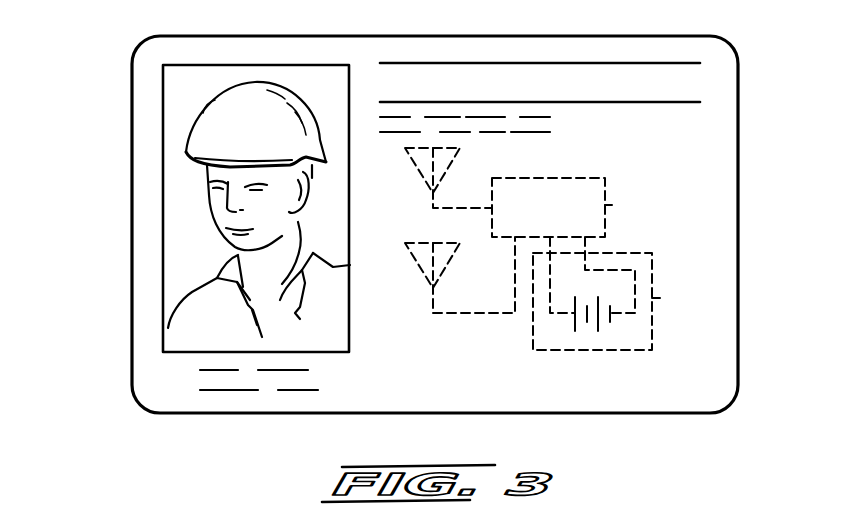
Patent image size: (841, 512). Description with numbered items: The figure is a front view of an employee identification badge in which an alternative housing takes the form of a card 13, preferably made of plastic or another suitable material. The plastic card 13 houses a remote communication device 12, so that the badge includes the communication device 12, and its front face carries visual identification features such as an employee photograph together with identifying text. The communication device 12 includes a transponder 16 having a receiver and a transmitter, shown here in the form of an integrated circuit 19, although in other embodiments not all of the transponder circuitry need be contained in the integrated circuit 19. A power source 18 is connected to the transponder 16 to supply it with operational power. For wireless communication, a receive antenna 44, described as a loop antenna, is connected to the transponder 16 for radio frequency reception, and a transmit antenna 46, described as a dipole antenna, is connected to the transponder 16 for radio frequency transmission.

The remote communication device 12 is at (689, 189).
The card 13 is at (132, 131).
The transponder 16 is at (568, 207).
The power source 18 is at (658, 298).
The integrated circuit 19 is at (620, 205).
The receive antenna 44 is at (412, 163).
The transmit antenna 46 is at (415, 263).